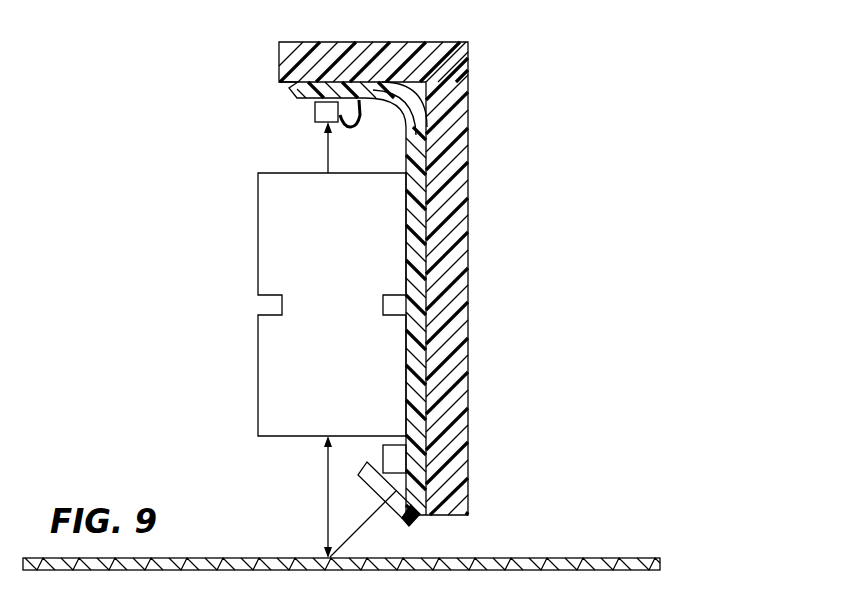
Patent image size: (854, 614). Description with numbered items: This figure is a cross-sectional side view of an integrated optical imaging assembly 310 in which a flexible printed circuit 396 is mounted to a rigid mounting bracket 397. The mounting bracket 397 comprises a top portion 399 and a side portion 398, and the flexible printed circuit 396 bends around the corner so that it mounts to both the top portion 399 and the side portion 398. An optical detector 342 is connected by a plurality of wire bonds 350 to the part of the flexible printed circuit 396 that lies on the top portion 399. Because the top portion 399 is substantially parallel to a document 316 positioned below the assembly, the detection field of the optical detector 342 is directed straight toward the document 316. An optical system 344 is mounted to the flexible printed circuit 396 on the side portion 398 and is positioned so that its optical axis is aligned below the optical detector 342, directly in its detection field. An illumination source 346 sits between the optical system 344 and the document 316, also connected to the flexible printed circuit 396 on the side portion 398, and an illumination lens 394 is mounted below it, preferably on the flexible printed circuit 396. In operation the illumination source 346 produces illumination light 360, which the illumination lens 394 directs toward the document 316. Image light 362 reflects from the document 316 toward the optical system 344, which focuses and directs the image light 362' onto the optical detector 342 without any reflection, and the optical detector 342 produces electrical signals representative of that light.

The integrated optical imaging assembly 310 is at (130, 160).
The document 316 is at (618, 558).
The optical detector 342 is at (315, 112).
The optical system 344 is at (350, 275).
The illumination source 346 is at (392, 463).
The wire bonds 350 is at (360, 107).
The illumination light 360 is at (352, 519).
The image light 362 is at (291, 497).
The image light 362' is at (297, 147).
The illumination lens 394 is at (392, 494).
The flexible printed circuit 396 is at (374, 301).
The mounting bracket 397 is at (411, 259).
The side portion 398 is at (411, 259).
The top portion 399 is at (390, 42).